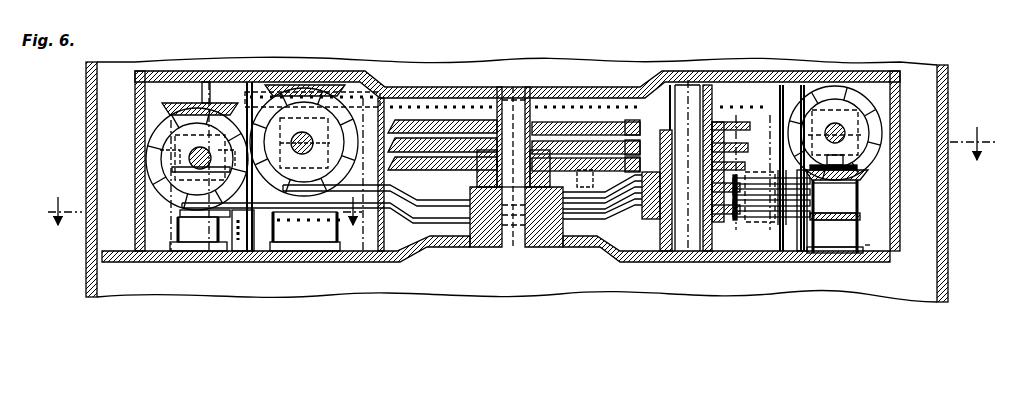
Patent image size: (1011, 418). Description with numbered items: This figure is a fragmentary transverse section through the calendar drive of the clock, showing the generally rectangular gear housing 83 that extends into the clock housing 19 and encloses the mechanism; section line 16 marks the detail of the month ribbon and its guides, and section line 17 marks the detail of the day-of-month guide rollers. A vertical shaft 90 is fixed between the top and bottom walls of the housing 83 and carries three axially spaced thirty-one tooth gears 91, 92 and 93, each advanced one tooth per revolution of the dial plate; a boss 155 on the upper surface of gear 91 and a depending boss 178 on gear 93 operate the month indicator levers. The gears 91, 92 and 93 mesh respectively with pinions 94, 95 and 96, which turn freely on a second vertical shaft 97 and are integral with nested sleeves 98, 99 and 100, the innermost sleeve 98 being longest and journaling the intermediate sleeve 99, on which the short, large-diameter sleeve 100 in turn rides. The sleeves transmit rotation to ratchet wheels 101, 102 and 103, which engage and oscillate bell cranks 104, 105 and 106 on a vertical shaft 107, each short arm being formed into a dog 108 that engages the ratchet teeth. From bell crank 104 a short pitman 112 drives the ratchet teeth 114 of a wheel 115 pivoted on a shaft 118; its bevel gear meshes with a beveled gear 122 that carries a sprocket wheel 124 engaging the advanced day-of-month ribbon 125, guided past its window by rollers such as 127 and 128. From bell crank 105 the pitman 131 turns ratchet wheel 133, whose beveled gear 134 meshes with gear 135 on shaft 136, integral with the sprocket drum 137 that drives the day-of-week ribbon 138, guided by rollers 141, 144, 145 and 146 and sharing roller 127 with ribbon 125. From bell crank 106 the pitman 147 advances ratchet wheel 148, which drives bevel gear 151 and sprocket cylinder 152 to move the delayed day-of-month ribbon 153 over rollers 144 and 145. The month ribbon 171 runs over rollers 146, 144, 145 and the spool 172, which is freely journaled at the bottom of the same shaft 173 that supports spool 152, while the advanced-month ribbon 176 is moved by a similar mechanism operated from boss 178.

The section line 16- 16 is at (203, 228).
The section line 17- 17 is at (972, 135).
The clock housing 19 is at (84, 101).
The gear housing 83 is at (579, 86).
The vertical shaft 90 is at (512, 104).
The gear 91 is at (550, 123).
The gear 92 is at (445, 163).
The gear 93 is at (465, 167).
The pinion 94 is at (727, 130).
The pinion 95 is at (740, 148).
The pinion 96 is at (752, 167).
The vertical shaft 97 is at (699, 90).
The sleeve 98 is at (690, 132).
The sleeve 99 is at (658, 203).
The sleeve 100 is at (641, 172).
The ratchet wheel 101 is at (615, 219).
The ratchet wheel 102 is at (625, 210).
The ratchet wheel 103 is at (640, 228).
The bell crank 104 is at (800, 166).
The bell crank 105 is at (852, 228).
The bell crank 106 is at (860, 243).
The vertical shaft 107 is at (797, 250).
The dog 108 is at (748, 218).
The pitman 112 is at (860, 197).
The ratchet teeth 114 is at (880, 139).
The wheel 115 is at (862, 98).
The shaft 118 is at (843, 131).
The beveled gear 122 is at (815, 195).
The sprocket wheel 124 is at (868, 180).
The ribbon 125 is at (818, 130).
The guide roller 127 is at (692, 247).
The guide roller 128 is at (772, 250).
The pitman 131 is at (456, 208).
The ratchet wheel 133 is at (268, 110).
The beveled gear 134 is at (384, 118).
The gear 135 is at (322, 100).
The shaft 136 is at (297, 83).
The sprocket cylinder 137 is at (343, 120).
The ribbon 138 is at (603, 110).
The guide roller 141 is at (395, 122).
The guide roller 144 is at (337, 249).
The guide roller 145 is at (282, 248).
The guide roller 146 is at (257, 237).
The pitman 147 is at (412, 219).
The ratchet wheel 148 is at (152, 166).
The bevel gear 151 is at (170, 101).
The sprocket cylinder 152 is at (175, 136).
The ribbon 153 is at (234, 167).
The boss 155 is at (445, 103).
The ribbon 171 is at (172, 228).
The guide spool 172 is at (192, 231).
The shaft 173 is at (207, 90).
The ribbon 176 is at (866, 246).
The depending boss 178 is at (593, 187).